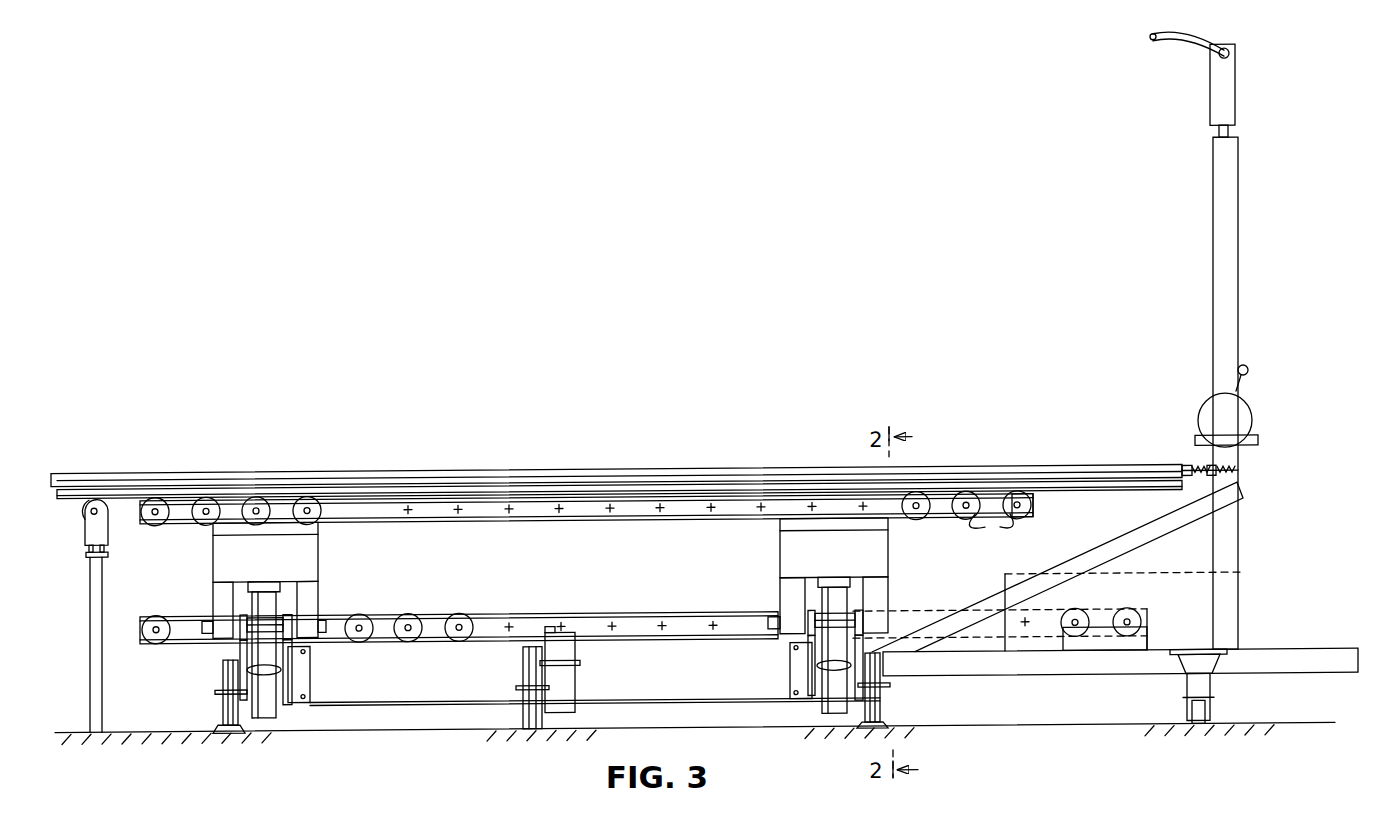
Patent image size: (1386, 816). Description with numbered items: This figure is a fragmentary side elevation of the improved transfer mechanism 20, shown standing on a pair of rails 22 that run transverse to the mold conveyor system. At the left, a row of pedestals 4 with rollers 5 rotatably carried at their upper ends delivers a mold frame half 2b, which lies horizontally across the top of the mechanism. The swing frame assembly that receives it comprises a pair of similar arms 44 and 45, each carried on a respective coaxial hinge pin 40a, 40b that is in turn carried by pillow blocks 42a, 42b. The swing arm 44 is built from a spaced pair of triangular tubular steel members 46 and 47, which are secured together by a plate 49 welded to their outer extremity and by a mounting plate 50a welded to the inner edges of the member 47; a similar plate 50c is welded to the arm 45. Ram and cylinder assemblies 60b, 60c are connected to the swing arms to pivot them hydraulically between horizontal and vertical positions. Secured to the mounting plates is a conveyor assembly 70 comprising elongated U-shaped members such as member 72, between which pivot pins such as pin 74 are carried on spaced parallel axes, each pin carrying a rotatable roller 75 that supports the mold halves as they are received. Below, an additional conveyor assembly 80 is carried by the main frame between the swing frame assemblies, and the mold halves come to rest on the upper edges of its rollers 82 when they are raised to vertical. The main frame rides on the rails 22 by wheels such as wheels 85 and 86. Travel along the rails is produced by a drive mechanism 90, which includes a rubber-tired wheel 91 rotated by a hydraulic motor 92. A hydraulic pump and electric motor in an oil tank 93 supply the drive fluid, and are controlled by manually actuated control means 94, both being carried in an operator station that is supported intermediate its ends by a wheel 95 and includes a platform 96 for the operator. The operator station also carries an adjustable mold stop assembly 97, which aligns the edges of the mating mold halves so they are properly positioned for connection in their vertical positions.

The transfer mechanism 20 is at (877, 389).
The mold frame half 2b is at (963, 476).
The pedestal 4 is at (90, 614).
The roller 5 is at (84, 513).
The rails 22 is at (237, 745).
The hinge pin 40a is at (778, 642).
The hinge pin 40b is at (326, 624).
The pillow block 42a is at (815, 628).
The pillow block 42b is at (283, 621).
The swing arm 44 is at (816, 623).
The swing arm 45 is at (281, 628).
The triangular member 46 is at (783, 601).
The triangular member 47 is at (888, 593).
The plate 49 is at (823, 575).
The mounting plate 50a is at (888, 530).
The mounting plate 50c is at (318, 531).
The ram and cylinder assembly 60b is at (828, 713).
The ram and cylinder assembly 60c is at (276, 708).
The conveyor assembly 70 is at (1042, 513).
The U-shaped member 72 is at (1035, 527).
The pivot pin 74 is at (991, 532).
The roller 75 is at (968, 513).
The conveyor assembly 80 is at (598, 618).
The roller 82 is at (1132, 654).
The wheel 85 is at (222, 713).
The wheel 86 is at (881, 711).
The drive mechanism 90 is at (504, 688).
The rubber-tired wheel 91 is at (523, 719).
The hydraulic motor 92 is at (573, 655).
The oil tank 93 is at (1163, 611).
The control means 94 is at (1248, 423).
The wheel 95 is at (1211, 724).
The platform 96 is at (1294, 660).
The mold stop assembly 97 is at (1192, 478).